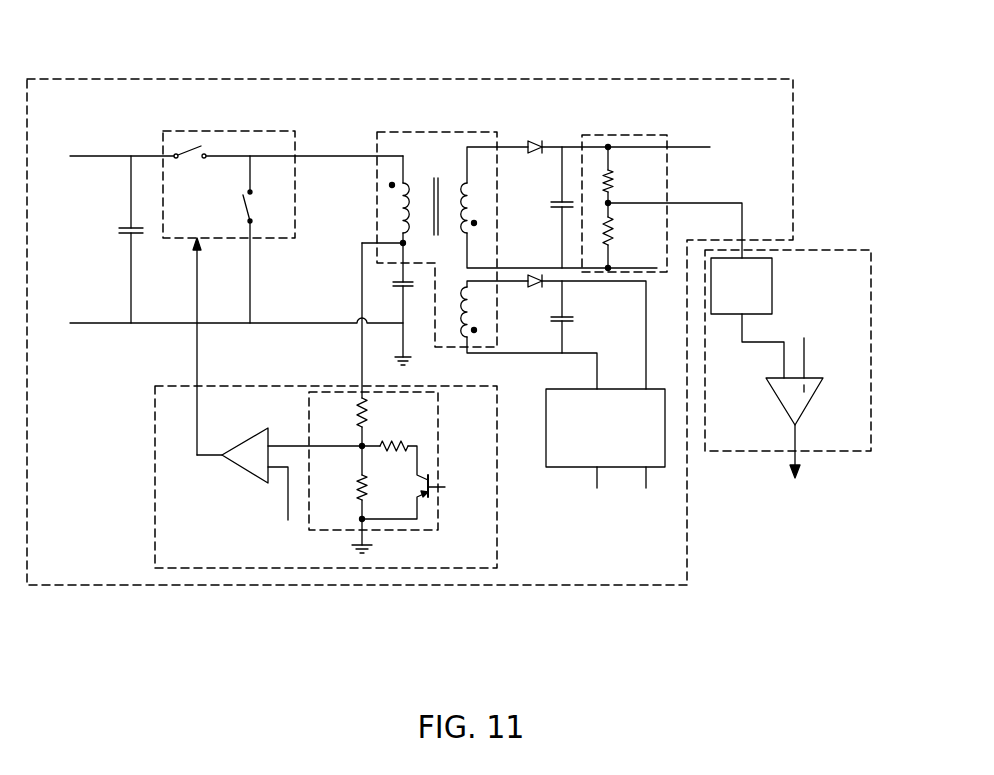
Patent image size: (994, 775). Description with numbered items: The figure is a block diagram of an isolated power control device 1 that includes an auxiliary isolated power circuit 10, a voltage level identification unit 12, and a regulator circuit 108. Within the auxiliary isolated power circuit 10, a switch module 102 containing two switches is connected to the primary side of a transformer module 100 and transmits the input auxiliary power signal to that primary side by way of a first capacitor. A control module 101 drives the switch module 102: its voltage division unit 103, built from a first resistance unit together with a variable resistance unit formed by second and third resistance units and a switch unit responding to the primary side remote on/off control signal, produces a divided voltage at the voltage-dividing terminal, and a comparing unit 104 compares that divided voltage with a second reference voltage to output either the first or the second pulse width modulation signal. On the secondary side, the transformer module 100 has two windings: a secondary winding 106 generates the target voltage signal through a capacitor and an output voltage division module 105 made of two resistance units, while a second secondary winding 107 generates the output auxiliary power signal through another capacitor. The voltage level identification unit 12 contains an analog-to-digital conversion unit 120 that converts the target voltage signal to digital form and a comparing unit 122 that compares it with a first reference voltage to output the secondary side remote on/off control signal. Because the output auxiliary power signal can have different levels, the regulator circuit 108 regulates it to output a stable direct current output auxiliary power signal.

The isolated power control device 1 is at (155, 40).
The auxiliary isolated power circuit 10 is at (793, 110).
The voltage level identification unit 12 is at (871, 312).
The transformer module 100 is at (536, 239).
The control module 101 is at (155, 468).
The switch module 102 is at (265, 238).
The voltage division unit 103 is at (440, 393).
The comparing unit 104 is at (232, 460).
The output voltage division module 105 is at (667, 140).
The secondary winding 106 is at (478, 198).
The secondary winding 107 is at (476, 318).
The regulator circuit 108 is at (665, 455).
The analog-to-digital conversion unit 120 is at (772, 287).
The comparing unit 122 is at (810, 403).